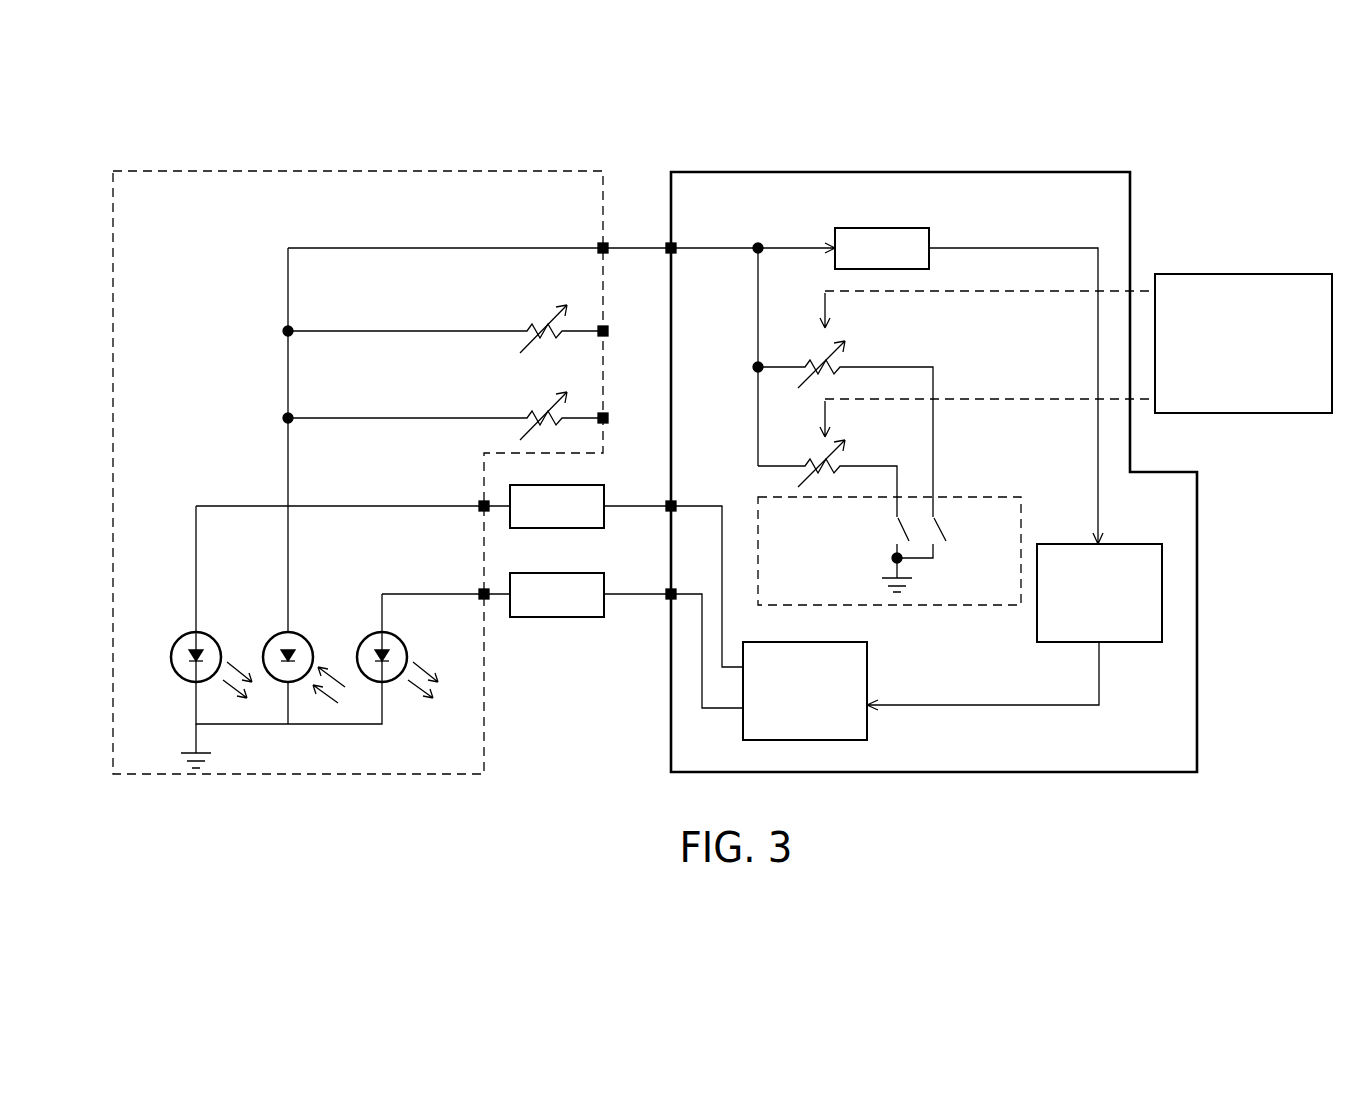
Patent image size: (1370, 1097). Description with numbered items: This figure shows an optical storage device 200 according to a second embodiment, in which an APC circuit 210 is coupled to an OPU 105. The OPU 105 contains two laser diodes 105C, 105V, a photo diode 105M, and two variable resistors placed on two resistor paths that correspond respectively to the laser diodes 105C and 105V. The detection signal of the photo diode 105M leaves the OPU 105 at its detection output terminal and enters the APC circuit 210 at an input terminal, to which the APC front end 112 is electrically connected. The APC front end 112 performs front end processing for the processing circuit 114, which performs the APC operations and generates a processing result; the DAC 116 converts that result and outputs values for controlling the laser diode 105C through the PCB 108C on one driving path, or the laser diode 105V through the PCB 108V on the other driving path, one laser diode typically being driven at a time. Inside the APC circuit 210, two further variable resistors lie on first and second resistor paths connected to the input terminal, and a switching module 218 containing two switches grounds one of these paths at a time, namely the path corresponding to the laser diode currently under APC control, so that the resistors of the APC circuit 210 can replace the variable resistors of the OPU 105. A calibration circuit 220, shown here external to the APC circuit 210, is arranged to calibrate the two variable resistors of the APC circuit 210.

The optical storage device 200 is at (1185, 120).
The OPU 105 is at (450, 171).
The laser diode 105C is at (177, 635).
The photo diode 105M is at (275, 637).
The laser diode 105V is at (366, 635).
The PCB 108C is at (580, 528).
The PCB 108V is at (580, 617).
The APC circuit 210 is at (928, 172).
The APC front end 112 is at (929, 236).
The switching module 218 is at (1021, 528).
The processing circuit 114 is at (1117, 544).
The DAC 116 is at (867, 658).
The calibration circuit 220 is at (1250, 274).